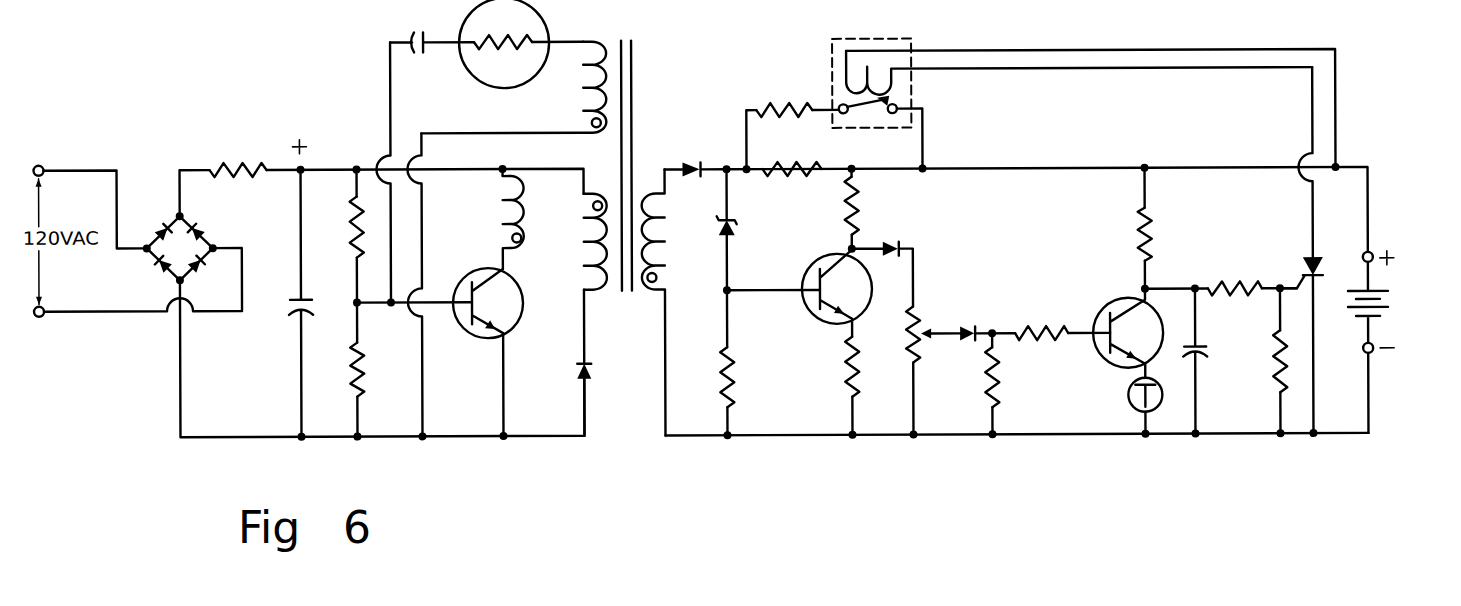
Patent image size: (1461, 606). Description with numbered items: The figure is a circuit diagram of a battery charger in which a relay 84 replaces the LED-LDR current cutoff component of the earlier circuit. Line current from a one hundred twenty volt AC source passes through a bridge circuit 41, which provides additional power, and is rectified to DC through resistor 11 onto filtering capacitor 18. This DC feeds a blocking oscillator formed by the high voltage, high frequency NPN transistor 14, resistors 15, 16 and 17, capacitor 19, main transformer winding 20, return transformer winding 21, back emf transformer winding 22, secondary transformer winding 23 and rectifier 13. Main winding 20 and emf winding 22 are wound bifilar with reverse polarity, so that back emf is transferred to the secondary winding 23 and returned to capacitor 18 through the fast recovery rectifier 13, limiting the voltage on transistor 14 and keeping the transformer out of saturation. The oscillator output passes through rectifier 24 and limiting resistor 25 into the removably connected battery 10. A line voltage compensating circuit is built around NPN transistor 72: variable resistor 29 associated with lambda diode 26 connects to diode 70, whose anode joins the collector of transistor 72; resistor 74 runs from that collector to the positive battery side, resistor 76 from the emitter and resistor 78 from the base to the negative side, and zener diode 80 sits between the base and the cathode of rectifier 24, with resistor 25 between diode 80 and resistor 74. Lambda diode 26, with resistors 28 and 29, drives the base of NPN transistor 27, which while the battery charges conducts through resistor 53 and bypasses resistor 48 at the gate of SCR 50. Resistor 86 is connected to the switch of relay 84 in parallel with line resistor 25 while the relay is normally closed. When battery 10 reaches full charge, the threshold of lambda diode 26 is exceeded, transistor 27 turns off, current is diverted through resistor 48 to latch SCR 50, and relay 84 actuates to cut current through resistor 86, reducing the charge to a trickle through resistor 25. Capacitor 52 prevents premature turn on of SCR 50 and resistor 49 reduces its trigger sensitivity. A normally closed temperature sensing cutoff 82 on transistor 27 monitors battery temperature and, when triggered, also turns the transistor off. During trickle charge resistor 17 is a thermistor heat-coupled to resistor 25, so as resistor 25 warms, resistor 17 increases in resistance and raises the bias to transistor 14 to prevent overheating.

The battery 10 is at (1390, 300).
The resistor 11 is at (238, 158).
The rectifier 13 is at (575, 385).
The NPN transistor 14 is at (473, 339).
The resistor 15 is at (352, 226).
The resistor 16 is at (352, 363).
The resistor 17 is at (494, 52).
The filtering capacitor 18 is at (298, 316).
The capacitor 19 is at (416, 56).
The main transformer winding 20 is at (500, 215).
The return transformer winding 21 is at (582, 100).
The back emf transformer winding 22 is at (586, 276).
The secondary transformer winding 23 is at (662, 254).
The rectifier 24 is at (694, 164).
The limiting resistor 25 is at (797, 175).
The lambda diode 26 is at (973, 318).
The NPN transistor 27 is at (1100, 304).
The resistor 28 is at (1038, 325).
The variable resistor 29 is at (922, 363).
The bridge circuit 41 is at (199, 224).
The resistor 48 is at (1230, 281).
The resistor 49 is at (1275, 376).
The SCR 50 is at (1320, 259).
The capacitor 52 is at (1203, 365).
The resistor 53 is at (1155, 210).
The diode 70 is at (889, 233).
The NPN transistor 72 is at (815, 319).
The resistor 74 is at (858, 203).
The resistor 76 is at (850, 401).
The resistor 78 is at (733, 392).
The zener diode 80 is at (732, 236).
The temperature sensing cutoff 82 is at (1124, 402).
The relay 84 is at (897, 89).
The resistor 86 is at (784, 102).